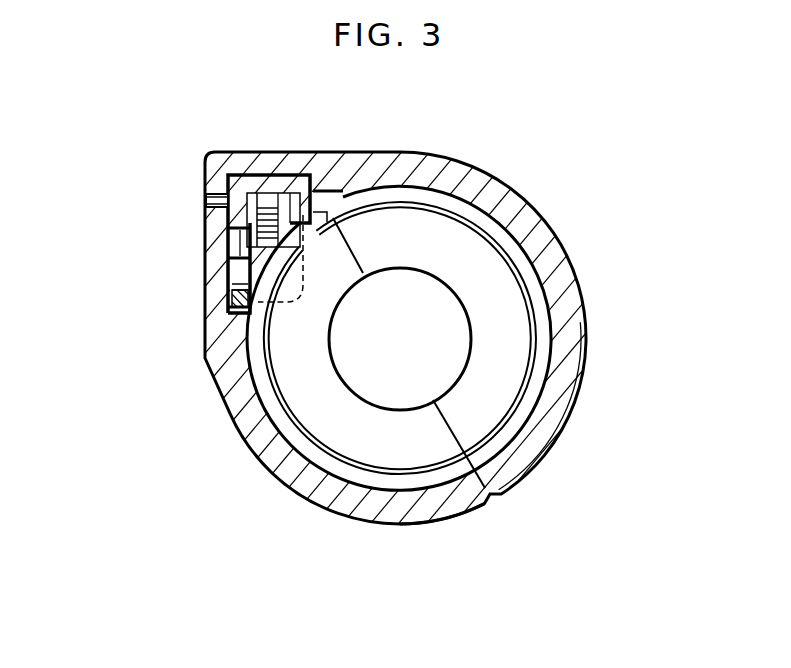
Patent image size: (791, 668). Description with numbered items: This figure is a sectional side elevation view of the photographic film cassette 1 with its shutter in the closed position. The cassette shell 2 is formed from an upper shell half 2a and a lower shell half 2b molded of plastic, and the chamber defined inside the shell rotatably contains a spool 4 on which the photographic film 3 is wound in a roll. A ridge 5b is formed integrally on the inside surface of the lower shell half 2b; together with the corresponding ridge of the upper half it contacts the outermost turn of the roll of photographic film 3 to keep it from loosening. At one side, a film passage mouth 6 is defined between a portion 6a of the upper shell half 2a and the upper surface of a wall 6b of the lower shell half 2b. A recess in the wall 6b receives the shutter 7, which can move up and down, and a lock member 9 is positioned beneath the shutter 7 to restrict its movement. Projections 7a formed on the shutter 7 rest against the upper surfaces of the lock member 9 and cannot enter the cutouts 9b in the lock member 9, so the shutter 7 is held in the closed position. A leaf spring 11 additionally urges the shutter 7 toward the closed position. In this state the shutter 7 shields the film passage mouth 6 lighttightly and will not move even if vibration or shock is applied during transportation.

The photographic film cassette 1 is at (556, 190).
The cassette shell 2 is at (618, 478).
The upper shell half 2a is at (535, 475).
The lower shell half 2b is at (482, 518).
The photographic film 3 is at (412, 200).
The spool 4 is at (353, 380).
The ridge 5b is at (388, 490).
The film passage mouth 6 is at (115, 165).
The portion of the upper shell half 6a is at (205, 197).
The wall 6b is at (205, 208).
The shutter 7 is at (242, 186).
The projections 7a is at (212, 262).
The lock member 9 is at (212, 325).
The cutouts 9b is at (212, 296).
The leaf spring 11 is at (268, 214).